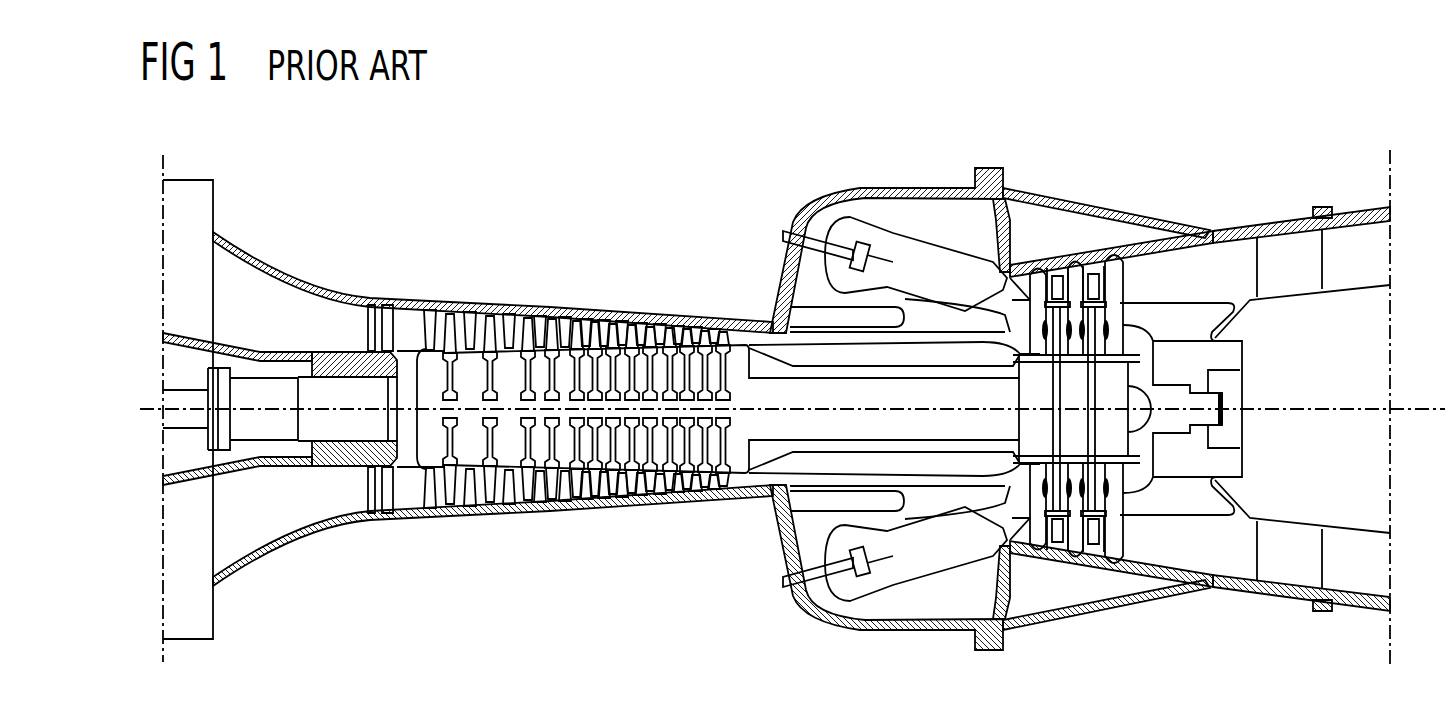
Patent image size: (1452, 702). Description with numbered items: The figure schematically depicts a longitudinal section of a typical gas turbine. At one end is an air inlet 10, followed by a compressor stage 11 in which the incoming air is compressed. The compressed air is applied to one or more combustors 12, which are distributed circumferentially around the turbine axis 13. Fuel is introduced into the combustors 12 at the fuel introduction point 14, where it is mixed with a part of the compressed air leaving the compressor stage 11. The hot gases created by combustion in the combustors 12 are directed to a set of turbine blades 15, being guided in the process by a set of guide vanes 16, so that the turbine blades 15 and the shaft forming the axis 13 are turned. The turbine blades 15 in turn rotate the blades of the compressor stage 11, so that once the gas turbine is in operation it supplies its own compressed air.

The air inlet 10 is at (202, 217).
The compressor stage 11 is at (578, 290).
The combustor 12 is at (940, 260).
The turbine axis 13 is at (1290, 410).
The fuel introduction point 14 is at (785, 582).
The turbine blade 15 is at (1113, 293).
The guide vane 16 is at (1050, 272).